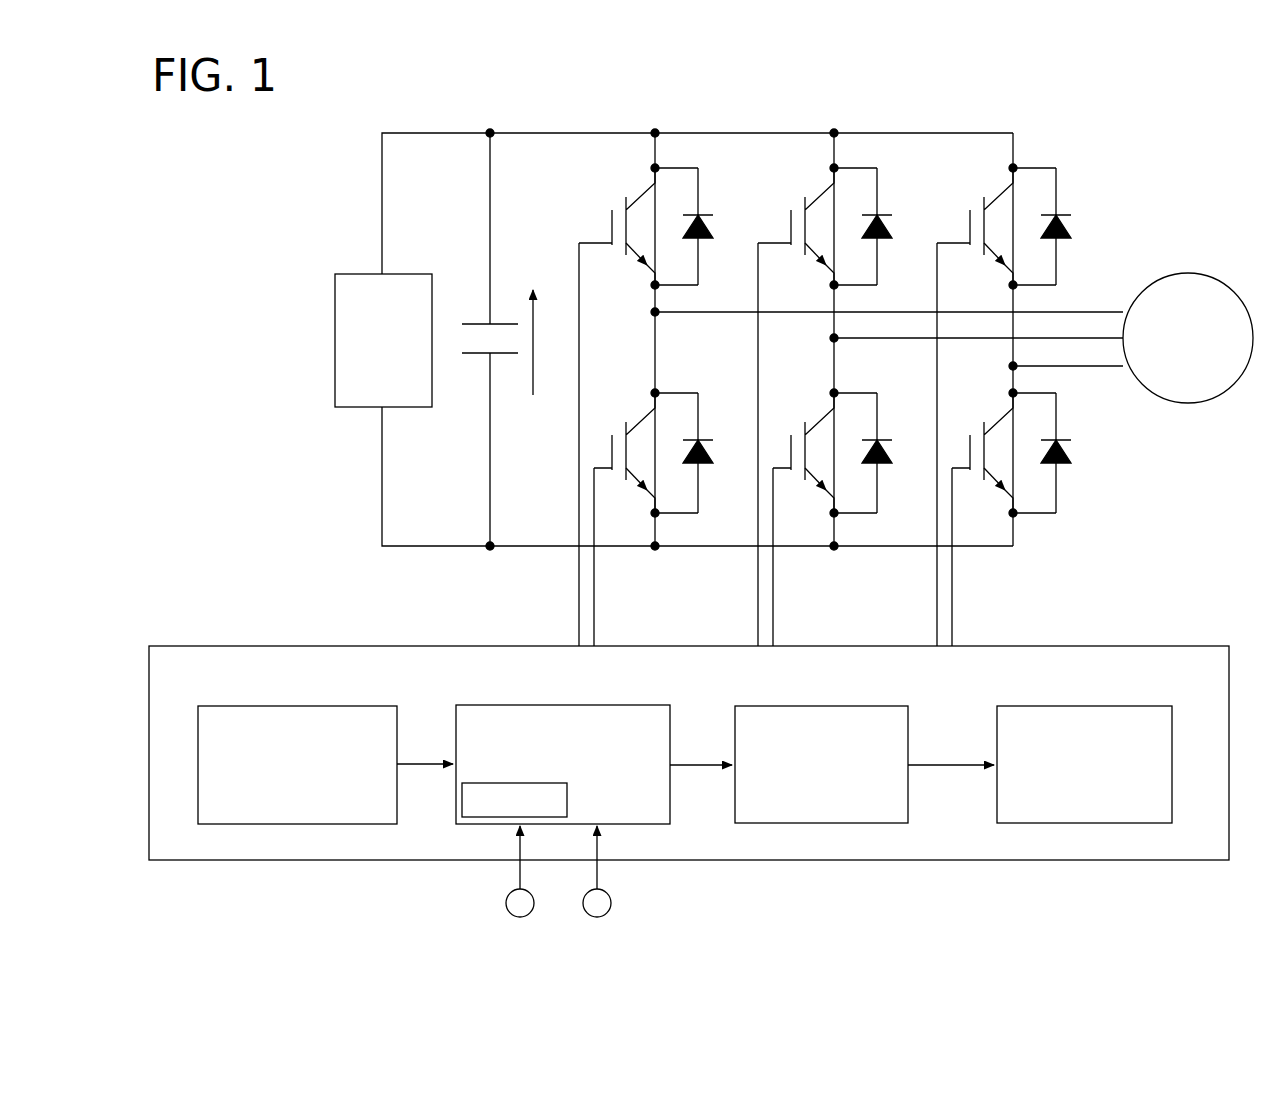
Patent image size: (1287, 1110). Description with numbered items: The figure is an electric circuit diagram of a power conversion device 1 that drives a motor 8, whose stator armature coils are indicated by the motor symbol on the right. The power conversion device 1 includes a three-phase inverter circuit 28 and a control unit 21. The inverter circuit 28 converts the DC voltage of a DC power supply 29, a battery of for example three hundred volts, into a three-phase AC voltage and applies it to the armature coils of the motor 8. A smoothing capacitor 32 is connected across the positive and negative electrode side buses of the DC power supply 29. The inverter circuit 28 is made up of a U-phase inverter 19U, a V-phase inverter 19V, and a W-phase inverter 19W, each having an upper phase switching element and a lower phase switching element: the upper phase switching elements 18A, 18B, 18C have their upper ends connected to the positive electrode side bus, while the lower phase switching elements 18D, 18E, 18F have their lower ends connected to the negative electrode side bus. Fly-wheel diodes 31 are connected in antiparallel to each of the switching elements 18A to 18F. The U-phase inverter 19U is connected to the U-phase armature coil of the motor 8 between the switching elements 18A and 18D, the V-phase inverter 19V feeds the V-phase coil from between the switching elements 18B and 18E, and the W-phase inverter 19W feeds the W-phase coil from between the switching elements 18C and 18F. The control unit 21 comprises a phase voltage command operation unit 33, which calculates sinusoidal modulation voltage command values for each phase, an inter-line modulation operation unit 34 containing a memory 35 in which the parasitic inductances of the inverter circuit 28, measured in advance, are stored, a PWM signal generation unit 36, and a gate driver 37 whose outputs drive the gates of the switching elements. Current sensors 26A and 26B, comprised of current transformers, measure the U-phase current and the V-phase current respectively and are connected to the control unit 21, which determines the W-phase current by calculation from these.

The power conversion device 1 is at (318, 364).
The motor 8 is at (1206, 278).
The upper phase switching element 18A is at (612, 212).
The upper phase switching element 18B is at (791, 212).
The upper phase switching element 18C is at (970, 212).
The lower phase switching element 18D is at (612, 437).
The lower phase switching element 18E is at (791, 437).
The lower phase switching element 18F is at (970, 436).
The U-phase inverter 19U is at (661, 216).
The V-phase inverter 19V is at (840, 212).
The W-phase inverter 19W is at (1020, 216).
The control unit 21 is at (250, 643).
The current sensor 26A is at (518, 917).
The current sensor 26B is at (598, 917).
The three-phase inverter circuit 28 is at (1078, 196).
The DC power supply 29 is at (335, 304).
The fly-wheel diode 31 is at (714, 226).
The smoothing capacitor 32 is at (478, 324).
The phase voltage command operation unit 33 is at (332, 707).
The inter-line modulation operation unit 34 is at (596, 706).
The memory 35 is at (510, 783).
The PWM signal generation unit 36 is at (858, 706).
The gate driver 37 is at (1120, 706).